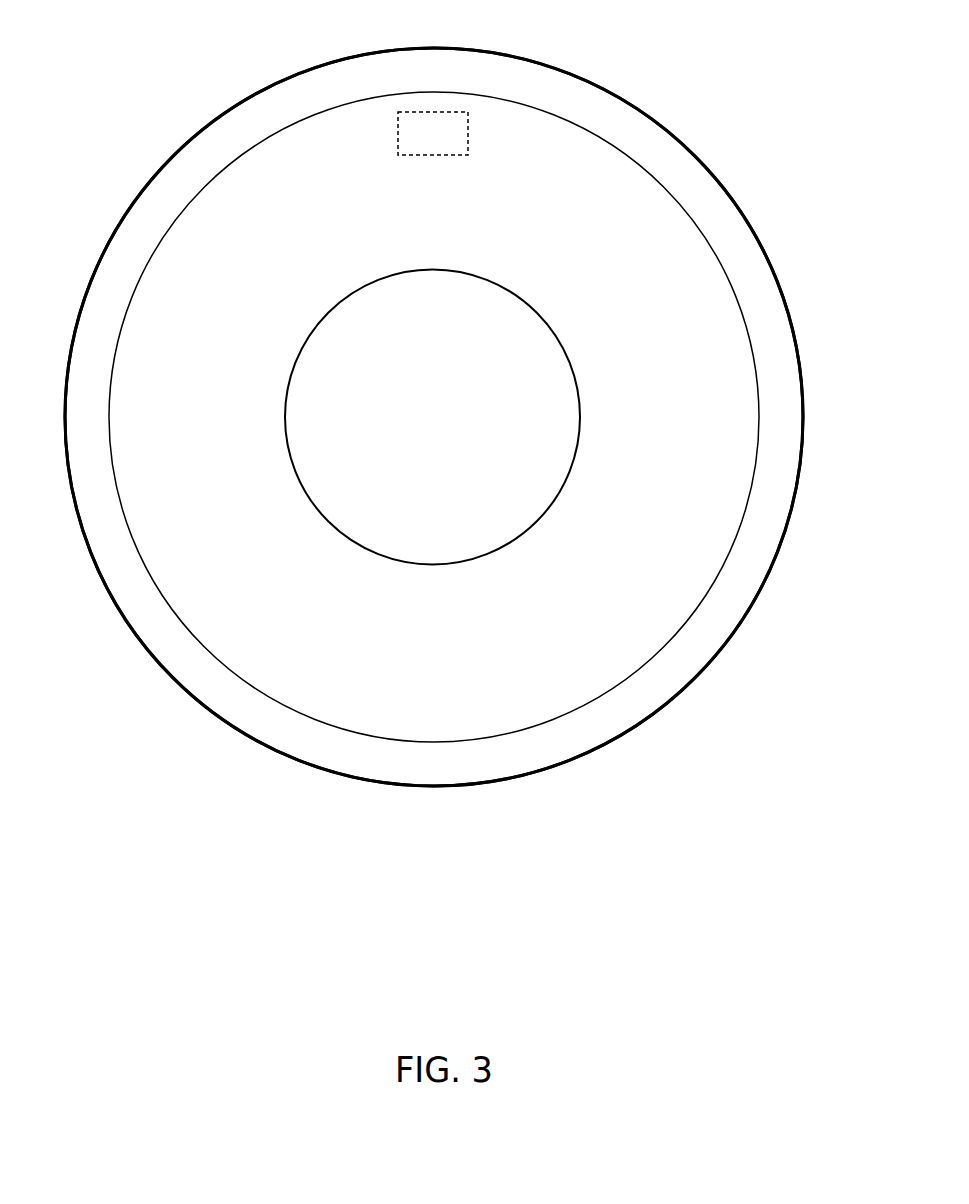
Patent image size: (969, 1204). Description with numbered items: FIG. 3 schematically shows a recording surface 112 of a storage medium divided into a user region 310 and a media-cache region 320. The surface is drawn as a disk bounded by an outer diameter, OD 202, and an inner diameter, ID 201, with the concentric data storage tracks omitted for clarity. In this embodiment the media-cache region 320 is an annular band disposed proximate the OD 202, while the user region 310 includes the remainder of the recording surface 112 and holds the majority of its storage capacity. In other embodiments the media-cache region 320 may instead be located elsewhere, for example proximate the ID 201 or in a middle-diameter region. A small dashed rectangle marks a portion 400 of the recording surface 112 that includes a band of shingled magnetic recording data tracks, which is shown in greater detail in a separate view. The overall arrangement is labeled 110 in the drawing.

The device housing 110 is at (612, 57).
The recording surface 112 is at (453, 224).
The ID 201 is at (303, 348).
The OD 202 is at (210, 717).
The user region 310 is at (212, 427).
The media-cache region 320 is at (213, 140).
The portion 400 is at (437, 112).